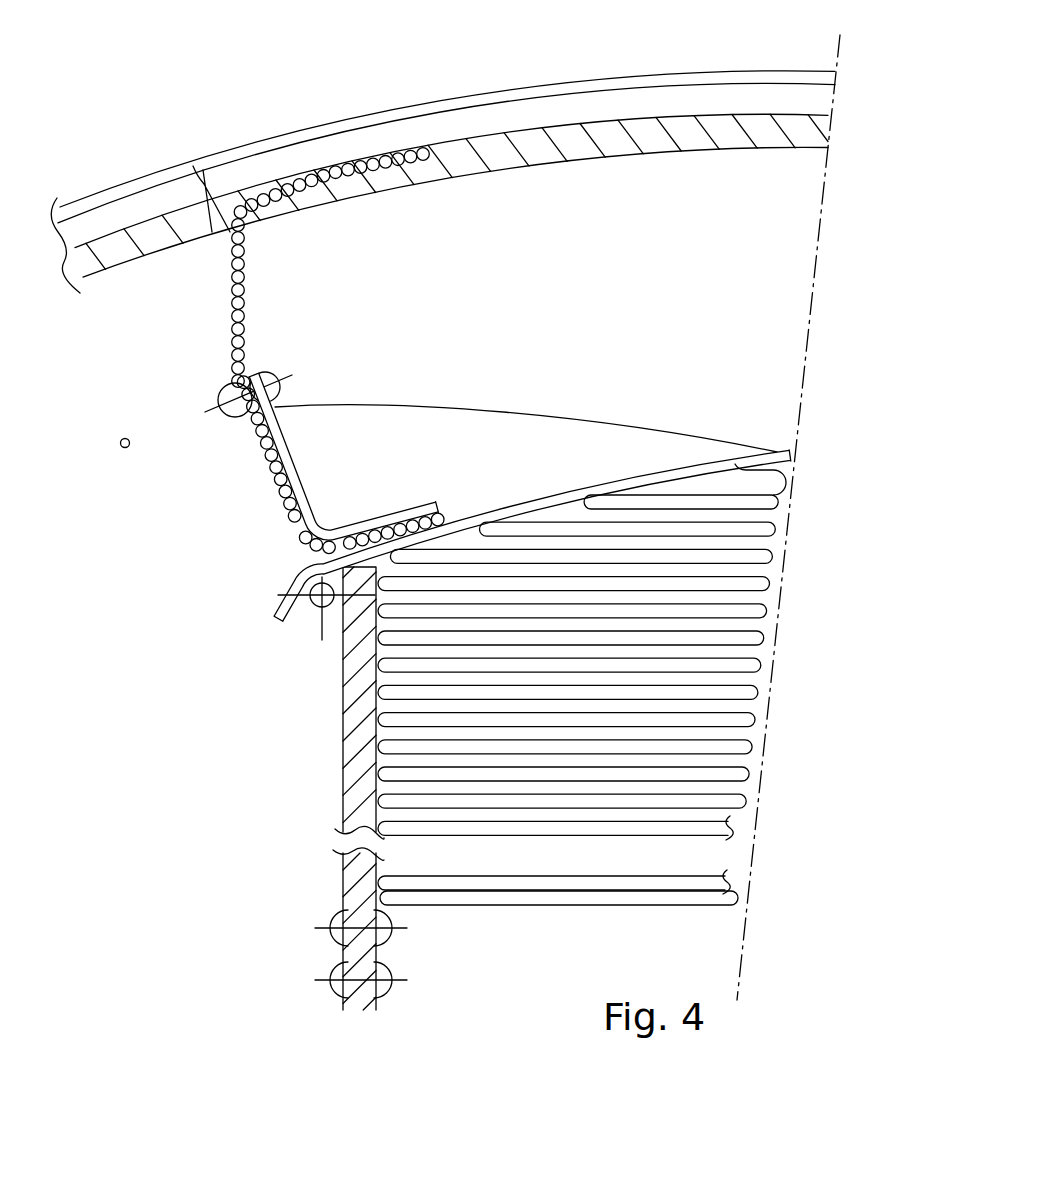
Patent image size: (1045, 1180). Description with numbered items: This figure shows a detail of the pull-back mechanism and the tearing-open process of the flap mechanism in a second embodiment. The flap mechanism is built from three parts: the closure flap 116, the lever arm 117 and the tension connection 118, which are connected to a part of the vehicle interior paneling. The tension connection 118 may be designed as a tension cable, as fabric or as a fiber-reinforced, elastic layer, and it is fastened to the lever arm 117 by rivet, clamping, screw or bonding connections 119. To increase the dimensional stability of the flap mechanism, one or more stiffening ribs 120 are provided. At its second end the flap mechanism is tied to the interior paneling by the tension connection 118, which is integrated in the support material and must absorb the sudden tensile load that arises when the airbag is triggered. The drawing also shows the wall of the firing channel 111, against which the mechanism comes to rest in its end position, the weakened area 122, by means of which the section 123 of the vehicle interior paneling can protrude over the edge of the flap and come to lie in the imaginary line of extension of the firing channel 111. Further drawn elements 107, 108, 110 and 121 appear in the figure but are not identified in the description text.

The display device 107 is at (120, 447).
The heat exchanger fins 108 is at (587, 443).
The pivot pin 110 is at (299, 615).
The firing channel 111 is at (343, 770).
The closure flap 116 is at (530, 501).
The lever arm 117 is at (270, 494).
The tension connection 118 is at (231, 307).
The bonding connection 119 is at (272, 376).
The stiffening rib 120 is at (500, 407).
The center axis 121 is at (834, 106).
The weakened area 122 is at (193, 166).
The section of the vehicle interior paneling 123 is at (583, 115).